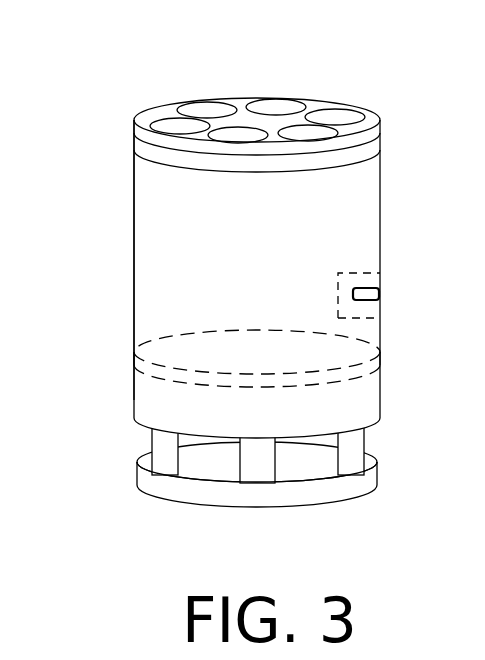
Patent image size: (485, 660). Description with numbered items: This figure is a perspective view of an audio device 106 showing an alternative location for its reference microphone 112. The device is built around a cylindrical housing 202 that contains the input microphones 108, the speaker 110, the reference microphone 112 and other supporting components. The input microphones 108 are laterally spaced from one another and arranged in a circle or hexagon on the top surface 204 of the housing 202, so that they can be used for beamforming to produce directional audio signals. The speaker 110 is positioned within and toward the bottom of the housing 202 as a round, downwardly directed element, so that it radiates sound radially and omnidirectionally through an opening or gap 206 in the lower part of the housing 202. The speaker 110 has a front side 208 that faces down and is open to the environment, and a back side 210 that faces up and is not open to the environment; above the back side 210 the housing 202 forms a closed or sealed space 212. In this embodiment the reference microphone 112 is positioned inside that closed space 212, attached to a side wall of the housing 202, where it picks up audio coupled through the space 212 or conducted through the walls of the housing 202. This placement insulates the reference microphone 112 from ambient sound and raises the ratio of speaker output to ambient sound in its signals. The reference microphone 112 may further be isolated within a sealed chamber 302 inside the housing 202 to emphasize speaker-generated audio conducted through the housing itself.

The audio device 106 is at (118, 70).
The input microphones 108 is at (187, 122).
The speaker 110 is at (372, 363).
The reference microphone 112 is at (372, 295).
The cylindrical housing 202 is at (386, 227).
The top surface 204 is at (372, 118).
The omnidirectional opening or gap 206 is at (195, 468).
The front side of speaker 208 is at (247, 388).
The back side of speaker 210 is at (231, 343).
The closed or sealed space or chamber 212 is at (347, 198).
The sealed chamber 302 is at (355, 276).